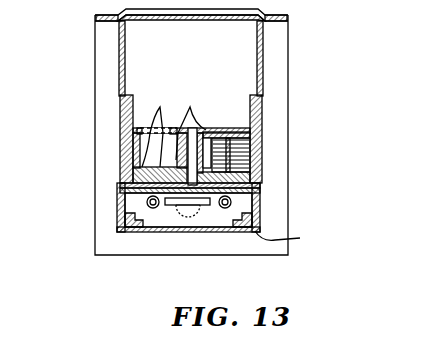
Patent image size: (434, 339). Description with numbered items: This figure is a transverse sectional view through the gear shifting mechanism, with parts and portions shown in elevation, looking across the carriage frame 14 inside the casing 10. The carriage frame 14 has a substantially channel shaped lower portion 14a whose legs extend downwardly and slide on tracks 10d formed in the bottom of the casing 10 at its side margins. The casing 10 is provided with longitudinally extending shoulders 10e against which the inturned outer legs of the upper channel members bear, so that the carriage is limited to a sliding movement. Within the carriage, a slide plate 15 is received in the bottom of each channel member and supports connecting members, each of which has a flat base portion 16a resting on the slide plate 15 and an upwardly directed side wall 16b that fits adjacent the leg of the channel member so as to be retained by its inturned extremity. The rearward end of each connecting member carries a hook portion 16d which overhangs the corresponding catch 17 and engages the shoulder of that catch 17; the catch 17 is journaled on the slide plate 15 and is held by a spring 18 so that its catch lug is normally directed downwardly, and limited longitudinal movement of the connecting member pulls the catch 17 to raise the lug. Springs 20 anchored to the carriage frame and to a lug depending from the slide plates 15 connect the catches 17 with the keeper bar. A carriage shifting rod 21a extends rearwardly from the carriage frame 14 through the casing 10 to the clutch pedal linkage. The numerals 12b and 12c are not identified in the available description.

The casing 10 is at (242, 83).
The longitudinally extending shoulders 10e is at (120, 118).
The tracks 10d is at (297, 230).
The support block 12b is at (262, 157).
The top plate 12c is at (188, 128).
The carriage frame 14 is at (262, 190).
The channel shaped lower portion 14a is at (120, 205).
The slide plate 15 is at (120, 178).
The flat base portion 16a is at (146, 110).
The side wall 16b is at (120, 153).
The hook portion 16d is at (240, 132).
The catch 17 is at (236, 133).
The spring 18 is at (262, 167).
The springs 20 is at (228, 195).
The carriage shifting rod 21a is at (183, 207).